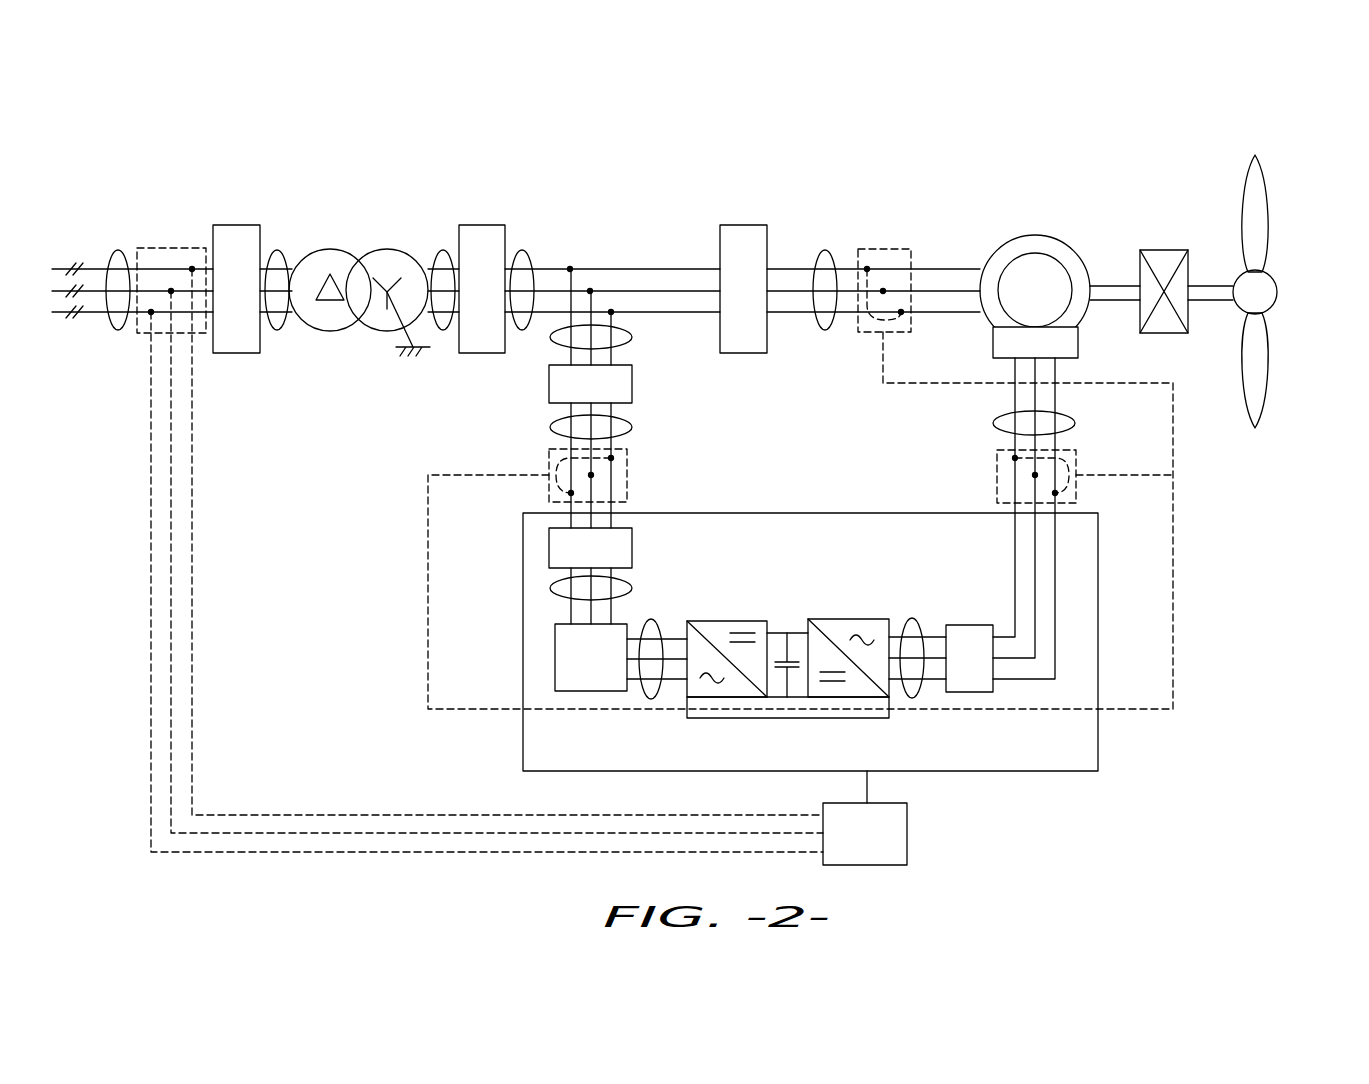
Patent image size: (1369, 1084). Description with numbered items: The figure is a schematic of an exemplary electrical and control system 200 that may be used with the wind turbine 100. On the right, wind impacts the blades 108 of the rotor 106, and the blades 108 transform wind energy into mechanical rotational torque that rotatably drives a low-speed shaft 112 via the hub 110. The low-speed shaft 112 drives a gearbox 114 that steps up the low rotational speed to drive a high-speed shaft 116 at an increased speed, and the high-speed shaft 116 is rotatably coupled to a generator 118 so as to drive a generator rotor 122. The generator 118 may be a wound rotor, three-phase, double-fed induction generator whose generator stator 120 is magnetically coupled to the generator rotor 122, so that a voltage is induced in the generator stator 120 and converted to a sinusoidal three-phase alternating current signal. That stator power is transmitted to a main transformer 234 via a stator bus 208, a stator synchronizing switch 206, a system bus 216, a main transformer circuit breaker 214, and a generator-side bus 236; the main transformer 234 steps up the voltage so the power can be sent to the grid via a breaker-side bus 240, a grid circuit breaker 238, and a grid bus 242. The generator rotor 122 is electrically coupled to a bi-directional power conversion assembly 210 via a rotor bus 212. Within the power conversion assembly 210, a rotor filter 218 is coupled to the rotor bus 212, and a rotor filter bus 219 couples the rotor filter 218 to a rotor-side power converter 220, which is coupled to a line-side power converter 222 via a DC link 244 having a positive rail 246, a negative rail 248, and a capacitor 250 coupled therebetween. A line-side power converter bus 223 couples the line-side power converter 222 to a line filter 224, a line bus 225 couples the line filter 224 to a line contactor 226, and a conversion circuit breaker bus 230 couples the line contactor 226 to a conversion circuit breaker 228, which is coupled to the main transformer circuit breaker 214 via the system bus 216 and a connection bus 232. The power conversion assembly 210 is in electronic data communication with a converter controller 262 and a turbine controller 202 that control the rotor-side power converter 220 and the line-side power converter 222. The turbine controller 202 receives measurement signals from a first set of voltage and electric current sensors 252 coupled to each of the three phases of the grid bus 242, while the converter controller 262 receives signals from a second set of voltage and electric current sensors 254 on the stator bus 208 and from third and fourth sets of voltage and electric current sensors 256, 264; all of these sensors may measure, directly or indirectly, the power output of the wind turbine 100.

The wind turbine 100 is at (1296, 257).
The rotor 106 is at (1299, 289).
The blades 108 is at (1268, 212).
The hub 110 is at (1278, 296).
The low-speed shaft 112 is at (1197, 286).
The gearbox 114 is at (1160, 250).
The high-speed shaft 116 is at (1105, 285).
The generator 118 is at (1028, 241).
The generator stator 120 is at (1035, 235).
The generator rotor 122 is at (1023, 269).
The electrical and control system 200 is at (178, 154).
The turbine controller 202 is at (841, 849).
The stator synchronizing switch 206 is at (745, 225).
The stator bus 208 is at (825, 250).
The power conversion assembly 210 is at (800, 551).
The rotor bus 212 is at (1075, 423).
The main transformer circuit breaker 214 is at (480, 225).
The system bus 216 is at (522, 250).
The rotor filter 218 is at (965, 625).
The rotor filter bus 219 is at (912, 625).
The rotor-side power converter 220 is at (889, 690).
The line-side power converter 222 is at (687, 708).
The line-side power converter bus 223 is at (648, 625).
The line filter 224 is at (555, 660).
The line bus 225 is at (551, 598).
The line contactor 226 is at (549, 548).
The conversion circuit breaker 228 is at (549, 380).
The conversion circuit breaker bus 230 is at (551, 422).
The connection bus 232 is at (631, 337).
The main transformer 234 is at (387, 250).
The generator-side bus 236 is at (443, 250).
The grid circuit breaker 238 is at (233, 225).
The breaker-side bus 240 is at (277, 250).
The grid bus 242 is at (118, 250).
The DC link 244 is at (788, 649).
The positive rail 246 is at (797, 633).
The negative rail 248 is at (787, 712).
The capacitor 250 is at (785, 645).
The first set of voltage and electric current sensors 252 is at (137, 352).
The second set of voltage and electric current sensors 254 is at (908, 243).
The third set of voltage and electric current sensors 256 is at (997, 476).
The converter controller 262 is at (840, 712).
The fourth set of voltage and electric current sensors 264 is at (627, 492).